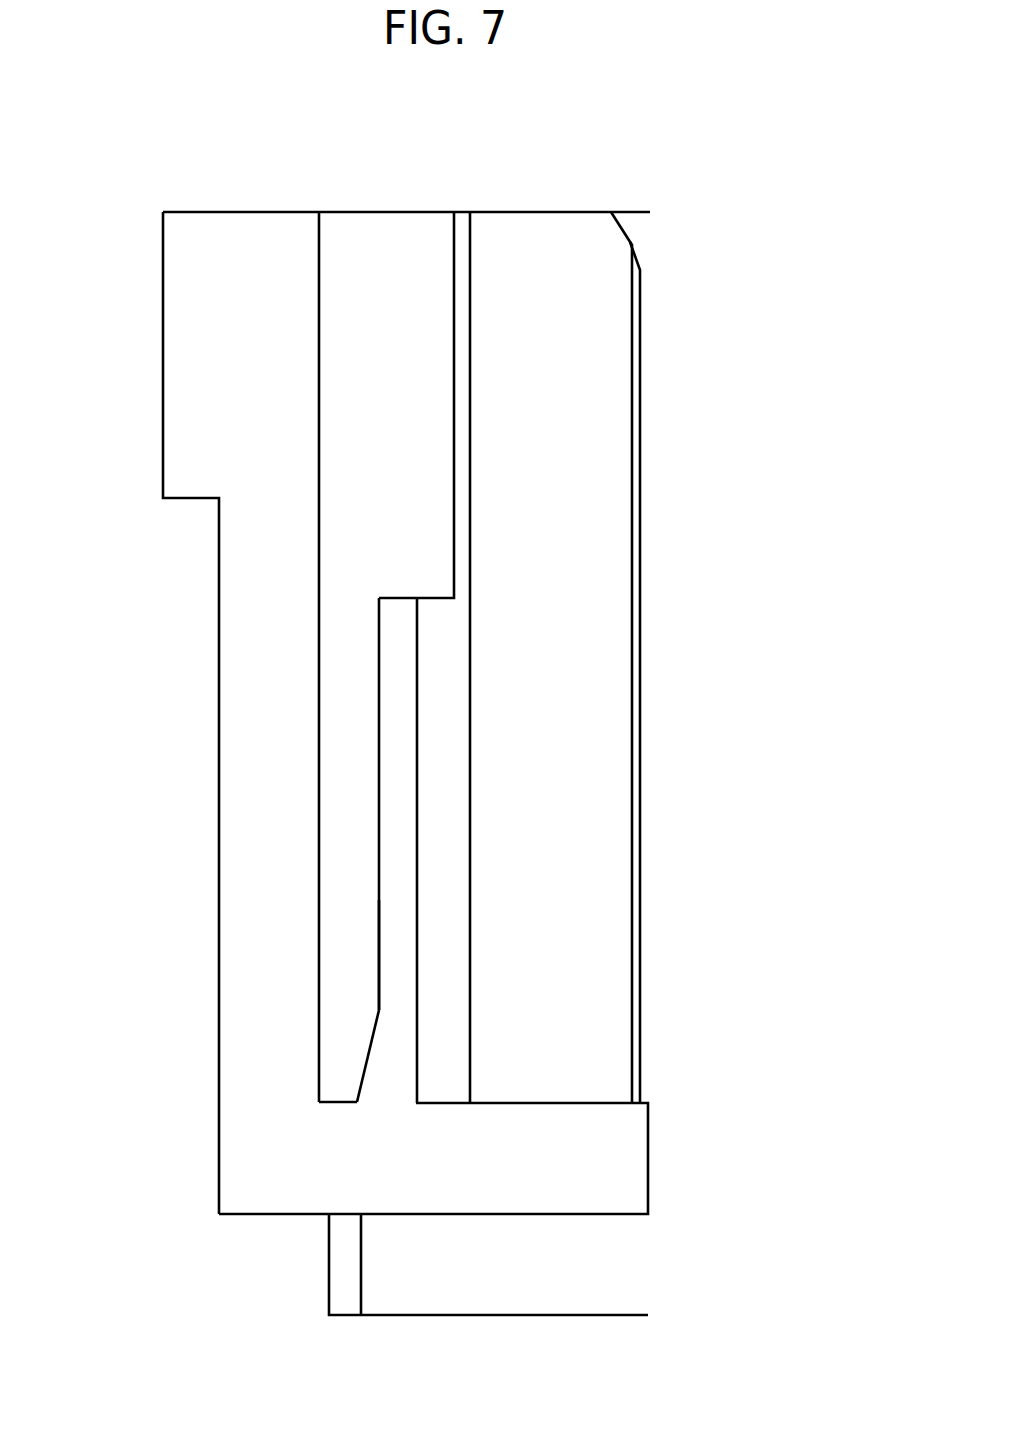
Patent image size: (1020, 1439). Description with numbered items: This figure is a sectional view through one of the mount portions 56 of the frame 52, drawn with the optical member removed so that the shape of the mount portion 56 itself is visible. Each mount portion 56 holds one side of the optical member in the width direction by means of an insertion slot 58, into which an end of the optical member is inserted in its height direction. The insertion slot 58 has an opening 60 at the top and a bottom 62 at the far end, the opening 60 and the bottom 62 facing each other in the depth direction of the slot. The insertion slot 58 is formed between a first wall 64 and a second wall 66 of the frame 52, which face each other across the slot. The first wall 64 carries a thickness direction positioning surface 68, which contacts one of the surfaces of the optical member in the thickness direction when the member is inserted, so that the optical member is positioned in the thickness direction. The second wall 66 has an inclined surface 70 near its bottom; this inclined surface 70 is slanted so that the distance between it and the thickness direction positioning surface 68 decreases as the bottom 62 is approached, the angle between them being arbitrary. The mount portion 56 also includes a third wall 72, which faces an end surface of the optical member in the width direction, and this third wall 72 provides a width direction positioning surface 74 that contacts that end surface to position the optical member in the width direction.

The frame 52 is at (653, 1165).
The mount portion 56 is at (364, 488).
The insertion slot 58 is at (331, 655).
The opening 60 is at (350, 605).
The bottom 62 is at (334, 1101).
The first wall 64 is at (229, 778).
The second wall 66 is at (433, 808).
The thickness direction positioning surface 68 is at (321, 945).
The inclined surface 70 is at (368, 1052).
The third wall 72 is at (405, 257).
The width direction positioning surface 74 is at (405, 257).